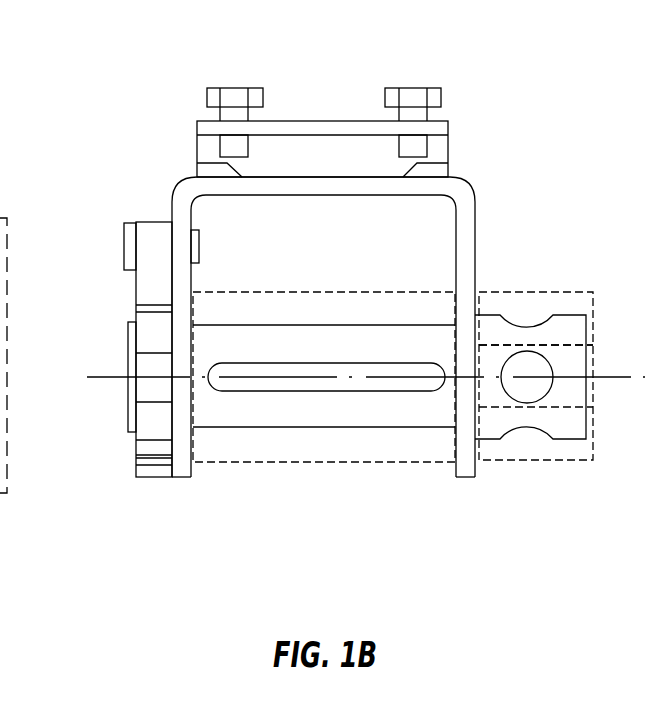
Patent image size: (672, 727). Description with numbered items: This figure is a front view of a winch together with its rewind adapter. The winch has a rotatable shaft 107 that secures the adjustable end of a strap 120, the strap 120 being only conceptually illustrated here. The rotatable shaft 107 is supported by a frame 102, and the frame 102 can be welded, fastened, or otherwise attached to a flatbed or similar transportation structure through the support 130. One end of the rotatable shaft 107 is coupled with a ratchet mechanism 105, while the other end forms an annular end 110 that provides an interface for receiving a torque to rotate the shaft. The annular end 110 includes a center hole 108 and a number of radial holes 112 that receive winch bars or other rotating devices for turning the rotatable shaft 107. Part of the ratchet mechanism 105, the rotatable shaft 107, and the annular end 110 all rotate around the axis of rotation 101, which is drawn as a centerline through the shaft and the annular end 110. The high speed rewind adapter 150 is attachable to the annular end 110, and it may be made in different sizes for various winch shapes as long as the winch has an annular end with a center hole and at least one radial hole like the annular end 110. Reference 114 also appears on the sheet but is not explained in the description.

The support 130 is at (438, 127).
The frame 102 is at (463, 182).
The ratchet mechanism 105 is at (150, 221).
The strap 120 is at (290, 462).
The rotatable shaft 107 is at (332, 415).
The axis of rotation 101 is at (602, 380).
The annular end 110 is at (568, 363).
The radial holes 112 is at (531, 366).
The rewind adapter 150 is at (547, 460).
The center hole 108 is at (560, 346).
The support 114 is at (663, 502).